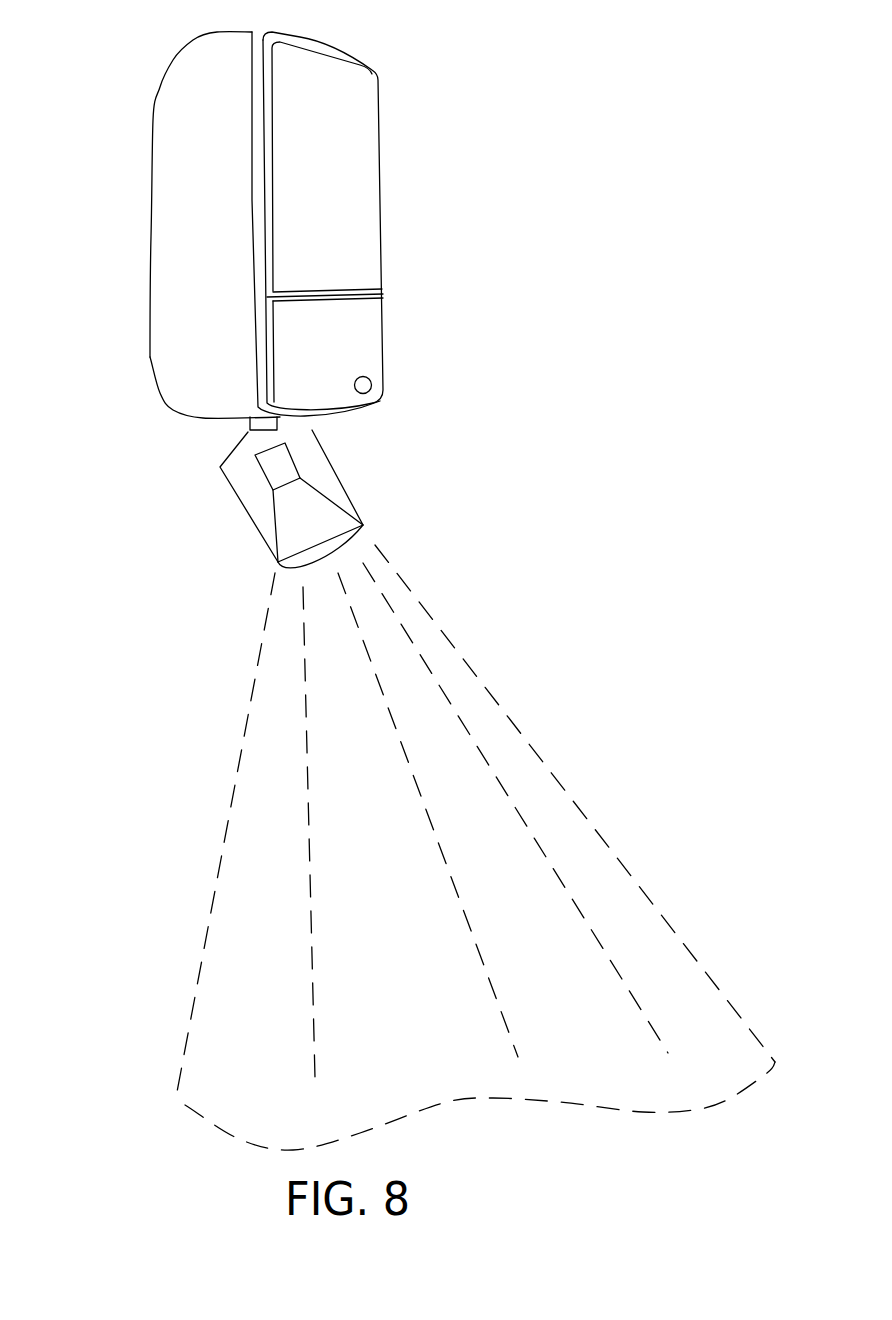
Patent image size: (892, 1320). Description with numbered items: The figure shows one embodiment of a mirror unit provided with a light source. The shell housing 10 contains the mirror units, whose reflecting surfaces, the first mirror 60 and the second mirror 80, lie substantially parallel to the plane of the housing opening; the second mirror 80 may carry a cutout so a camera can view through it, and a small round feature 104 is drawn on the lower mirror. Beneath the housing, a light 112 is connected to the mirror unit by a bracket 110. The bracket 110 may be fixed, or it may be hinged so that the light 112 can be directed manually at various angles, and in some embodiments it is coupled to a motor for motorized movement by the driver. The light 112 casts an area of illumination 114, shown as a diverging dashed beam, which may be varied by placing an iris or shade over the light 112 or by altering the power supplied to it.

The shell housing 10 is at (185, 298).
The first mirror 60 is at (340, 210).
The second mirror 80 is at (358, 348).
The push button 104 is at (368, 393).
The bracket 110 is at (248, 428).
The light 112 is at (230, 483).
The area of illumination 114 is at (502, 712).